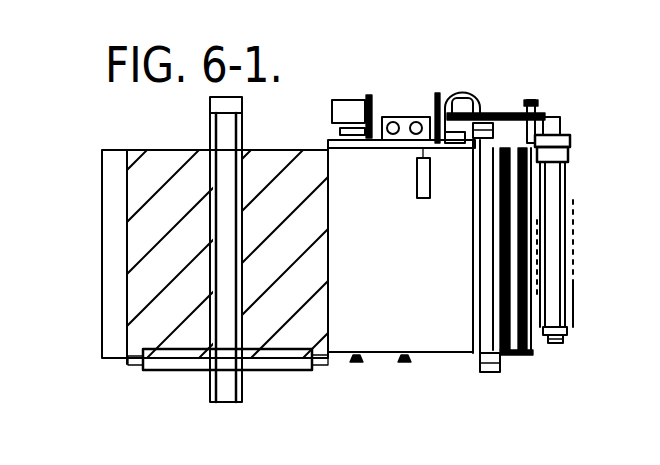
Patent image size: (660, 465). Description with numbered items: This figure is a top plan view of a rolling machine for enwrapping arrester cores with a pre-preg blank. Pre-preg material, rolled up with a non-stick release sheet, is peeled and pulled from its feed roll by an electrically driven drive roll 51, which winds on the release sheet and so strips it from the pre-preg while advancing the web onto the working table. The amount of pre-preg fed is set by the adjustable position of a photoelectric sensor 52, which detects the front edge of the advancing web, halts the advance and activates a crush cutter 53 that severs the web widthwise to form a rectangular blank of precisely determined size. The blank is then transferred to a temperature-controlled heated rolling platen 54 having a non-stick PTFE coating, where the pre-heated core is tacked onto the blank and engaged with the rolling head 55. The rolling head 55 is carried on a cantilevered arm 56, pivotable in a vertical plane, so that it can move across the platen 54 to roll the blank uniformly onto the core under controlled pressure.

The drive roll 51 is at (575, 320).
The photoelectric sensor 52 is at (413, 205).
The crush cutter 53 is at (487, 325).
The rolling platen 54 is at (140, 294).
The rolling head 55 is at (282, 357).
The cantilevered arm 56 is at (243, 387).